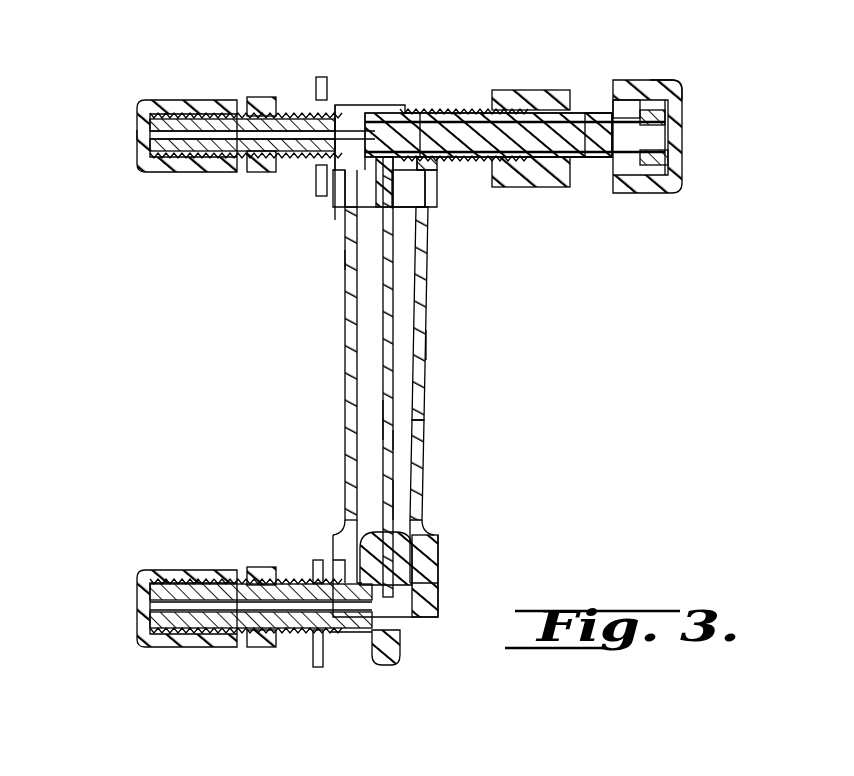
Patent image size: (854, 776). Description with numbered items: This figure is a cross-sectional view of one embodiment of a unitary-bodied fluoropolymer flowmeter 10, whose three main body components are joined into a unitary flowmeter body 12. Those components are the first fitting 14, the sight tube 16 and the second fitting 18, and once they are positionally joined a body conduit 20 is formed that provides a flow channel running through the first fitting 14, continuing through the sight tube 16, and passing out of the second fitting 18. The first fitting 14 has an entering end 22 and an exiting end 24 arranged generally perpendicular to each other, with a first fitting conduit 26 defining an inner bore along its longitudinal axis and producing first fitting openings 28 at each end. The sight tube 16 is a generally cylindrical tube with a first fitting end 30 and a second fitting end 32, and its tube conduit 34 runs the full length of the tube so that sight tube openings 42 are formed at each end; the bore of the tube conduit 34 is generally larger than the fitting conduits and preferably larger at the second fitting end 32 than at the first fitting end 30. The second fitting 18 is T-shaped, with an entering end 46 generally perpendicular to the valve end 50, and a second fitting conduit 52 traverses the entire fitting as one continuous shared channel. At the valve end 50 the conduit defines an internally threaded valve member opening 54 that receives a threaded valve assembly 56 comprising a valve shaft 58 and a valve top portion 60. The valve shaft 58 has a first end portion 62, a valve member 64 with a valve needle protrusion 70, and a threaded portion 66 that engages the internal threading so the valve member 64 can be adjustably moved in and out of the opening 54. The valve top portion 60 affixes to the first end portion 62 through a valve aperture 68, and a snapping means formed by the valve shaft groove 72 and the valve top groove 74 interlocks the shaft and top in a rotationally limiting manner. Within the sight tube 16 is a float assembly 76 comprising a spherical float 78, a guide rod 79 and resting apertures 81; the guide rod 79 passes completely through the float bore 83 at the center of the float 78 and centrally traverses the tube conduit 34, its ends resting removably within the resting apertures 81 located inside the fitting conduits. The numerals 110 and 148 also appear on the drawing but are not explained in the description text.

The flowmeter 10 is at (503, 346).
The unitary flowmeter body 12 is at (338, 287).
The first fitting 14 is at (200, 578).
The sight tube 16 is at (425, 380).
The second fitting 18 is at (290, 110).
The body conduit 20 is at (424, 508).
The entering end 22 is at (140, 612).
The exiting end 24 is at (347, 632).
The first fitting conduit 26 is at (257, 578).
The first fitting openings 28 is at (333, 612).
The first fitting end 30 is at (430, 548).
The second fitting end 32 is at (440, 190).
The tube conduit 34 is at (383, 330).
The sight tube openings 42 is at (333, 197).
The entering end 46 is at (320, 167).
The valve end 50 is at (515, 185).
The second fitting conduit 52 is at (297, 98).
The valve member opening 54 is at (392, 110).
The valve assembly 56 is at (581, 170).
The valve shaft 58 is at (480, 114).
The valve top portion 60 is at (685, 128).
The first end portion 62 is at (665, 122).
The valve member 64 is at (593, 122).
The threaded portion 66 is at (445, 112).
The valve aperture 68 is at (620, 115).
The valve needle protrusion 70 is at (378, 103).
The valve shaft groove 72 is at (660, 82).
The valve top groove 74 is at (668, 157).
The float assembly 76 is at (400, 487).
The spherical float 78 is at (383, 438).
The guide rod 79 is at (395, 418).
The resting apertures 81 is at (440, 182).
The float bore 83 is at (347, 512).
The fluid sampling device 110 is at (175, 255).
The upper threaded nipple 148 is at (137, 132).